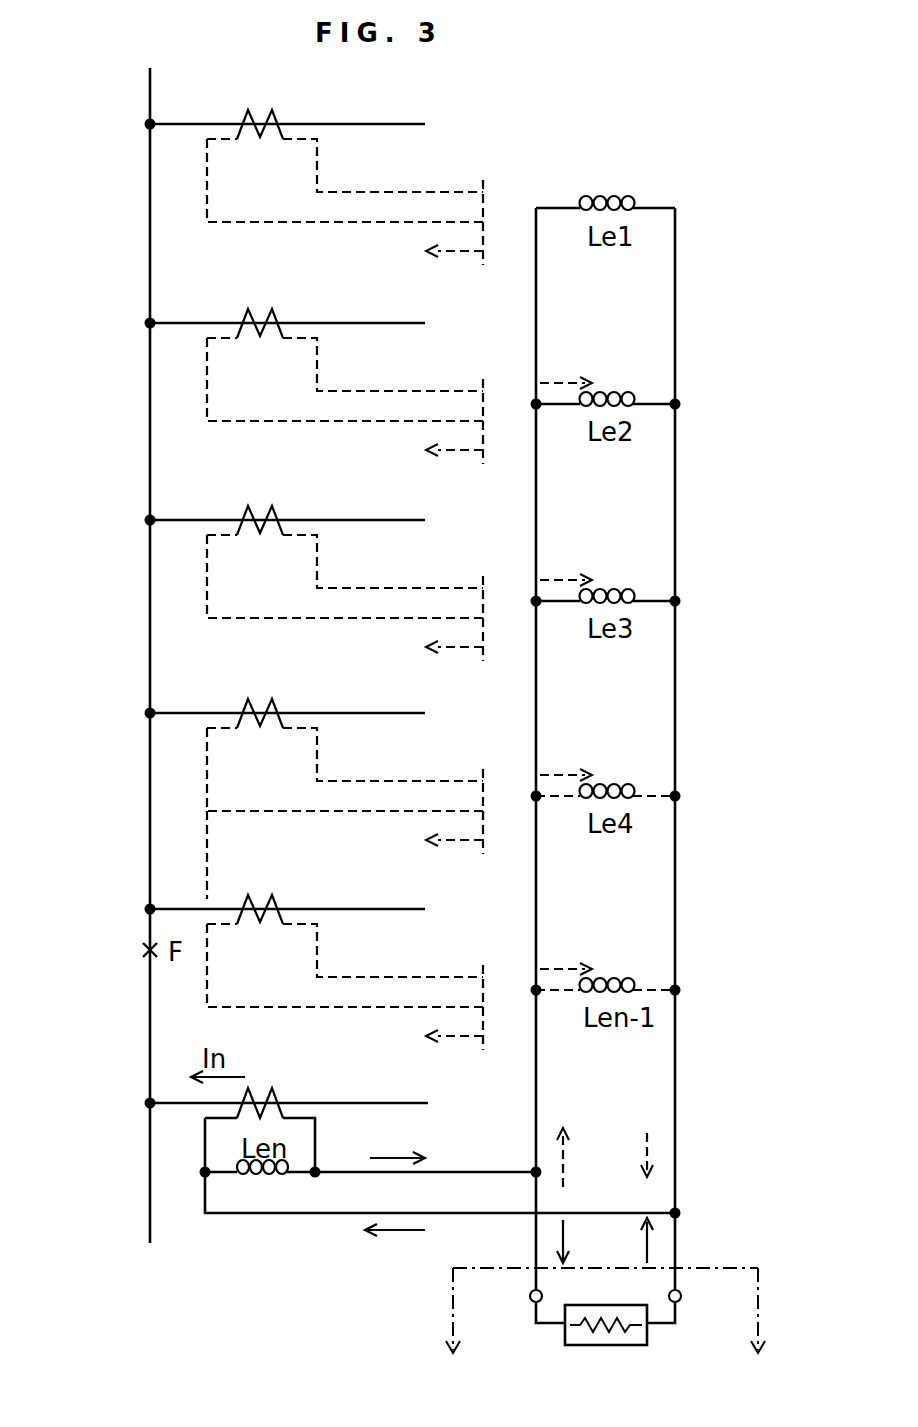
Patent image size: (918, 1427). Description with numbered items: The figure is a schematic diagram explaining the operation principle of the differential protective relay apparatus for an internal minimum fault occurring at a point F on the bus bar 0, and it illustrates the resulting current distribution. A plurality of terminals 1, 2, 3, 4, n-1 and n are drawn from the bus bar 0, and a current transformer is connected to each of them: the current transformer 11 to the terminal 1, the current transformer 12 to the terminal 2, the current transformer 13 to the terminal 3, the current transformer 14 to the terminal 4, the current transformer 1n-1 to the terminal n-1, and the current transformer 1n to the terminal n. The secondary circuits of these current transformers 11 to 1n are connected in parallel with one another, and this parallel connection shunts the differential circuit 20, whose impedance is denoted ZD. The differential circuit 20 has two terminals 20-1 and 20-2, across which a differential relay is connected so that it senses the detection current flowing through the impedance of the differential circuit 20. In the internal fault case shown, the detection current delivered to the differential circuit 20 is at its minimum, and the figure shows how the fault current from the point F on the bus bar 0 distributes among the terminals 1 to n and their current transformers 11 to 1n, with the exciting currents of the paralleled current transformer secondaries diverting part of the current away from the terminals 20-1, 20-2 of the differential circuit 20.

The bus bar 0 is at (150, 217).
The terminal 1 is at (296, 125).
The terminal 2 is at (296, 324).
The terminal 3 is at (296, 521).
The terminal 4 is at (296, 714).
The terminal n-1 is at (308, 910).
The terminal n is at (299, 1104).
The current transformer 11 is at (263, 116).
The current transformer 12 is at (263, 315).
The current transformer 13 is at (263, 512).
The current transformer 14 is at (263, 705).
The current transformer 1n-1 is at (263, 901).
The current transformer 1n is at (263, 1096).
The differential circuit 20 is at (548, 1326).
The terminal of differential circuit 20-1 is at (530, 1300).
The terminal of differential circuit 20-2 is at (681, 1294).